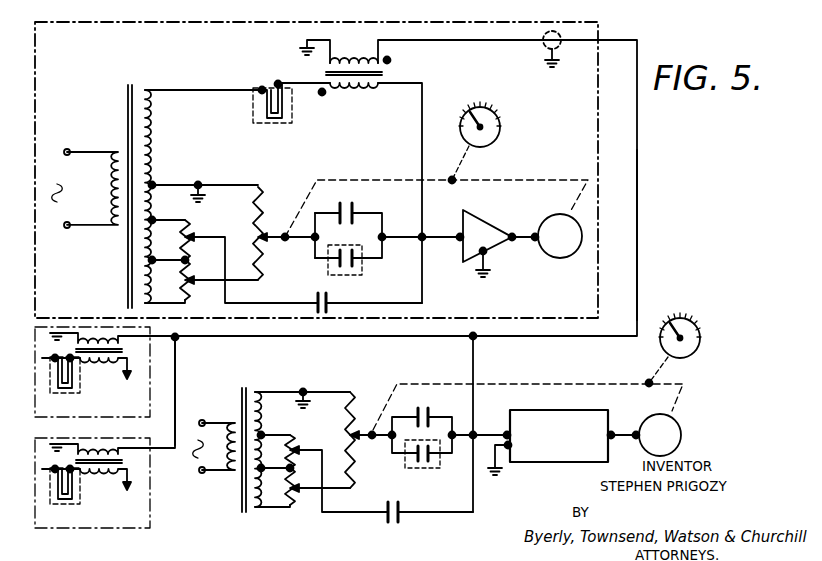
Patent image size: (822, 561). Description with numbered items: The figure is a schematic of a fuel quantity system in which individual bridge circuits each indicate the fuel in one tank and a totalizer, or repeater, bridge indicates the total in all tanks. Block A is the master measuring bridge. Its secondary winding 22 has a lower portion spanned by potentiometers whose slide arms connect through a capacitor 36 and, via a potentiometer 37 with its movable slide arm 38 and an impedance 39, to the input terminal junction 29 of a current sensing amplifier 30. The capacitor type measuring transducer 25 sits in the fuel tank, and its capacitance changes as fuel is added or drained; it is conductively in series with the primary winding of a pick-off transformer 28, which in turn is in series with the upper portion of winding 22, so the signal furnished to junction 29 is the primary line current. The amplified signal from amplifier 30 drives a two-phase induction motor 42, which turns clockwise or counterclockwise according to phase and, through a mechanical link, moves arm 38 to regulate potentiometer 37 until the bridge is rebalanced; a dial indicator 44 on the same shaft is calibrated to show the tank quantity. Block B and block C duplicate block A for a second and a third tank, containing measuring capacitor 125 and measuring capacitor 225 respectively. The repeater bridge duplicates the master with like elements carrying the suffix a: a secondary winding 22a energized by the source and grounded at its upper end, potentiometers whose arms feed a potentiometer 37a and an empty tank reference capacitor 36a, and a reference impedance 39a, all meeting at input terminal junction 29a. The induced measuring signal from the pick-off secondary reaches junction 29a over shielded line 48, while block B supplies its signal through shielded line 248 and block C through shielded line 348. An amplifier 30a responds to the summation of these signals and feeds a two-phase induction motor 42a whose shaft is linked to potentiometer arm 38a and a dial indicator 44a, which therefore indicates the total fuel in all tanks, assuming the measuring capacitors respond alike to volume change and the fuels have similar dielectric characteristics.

The secondary winding 22 is at (158, 152).
The capacitor type measuring transducer 25 is at (286, 116).
The pick-off transformer 28 is at (384, 70).
The input terminal junction 29 is at (424, 244).
The current sensing amplifier 30 is at (486, 223).
The capacitor 36 is at (330, 298).
The potentiometer 37 is at (262, 198).
The movable slide arm 38 is at (282, 243).
The impedance 39 is at (364, 229).
The two-phase induction motor 42 is at (551, 219).
The dial indicator 44 is at (498, 120).
The shielded line 48 is at (639, 238).
The measuring capacitor 125 is at (76, 387).
The measuring capacitor 225 is at (76, 498).
The shielded line 248 is at (162, 338).
The shielded line 348 is at (177, 388).
The secondary winding 22a is at (262, 417).
The input terminal junction 29a is at (479, 433).
The amplifier 30a is at (598, 410).
The empty tank reference capacitor 36a is at (402, 506).
The potentiometer 37a is at (352, 412).
The potentiometer arm 38a is at (368, 441).
The reference impedance 39a is at (430, 429).
The two-phase induction motor 42a is at (679, 429).
The dial indicator 44a is at (696, 326).
The block A is at (583, 27).
The block B is at (46, 405).
The block C is at (143, 506).